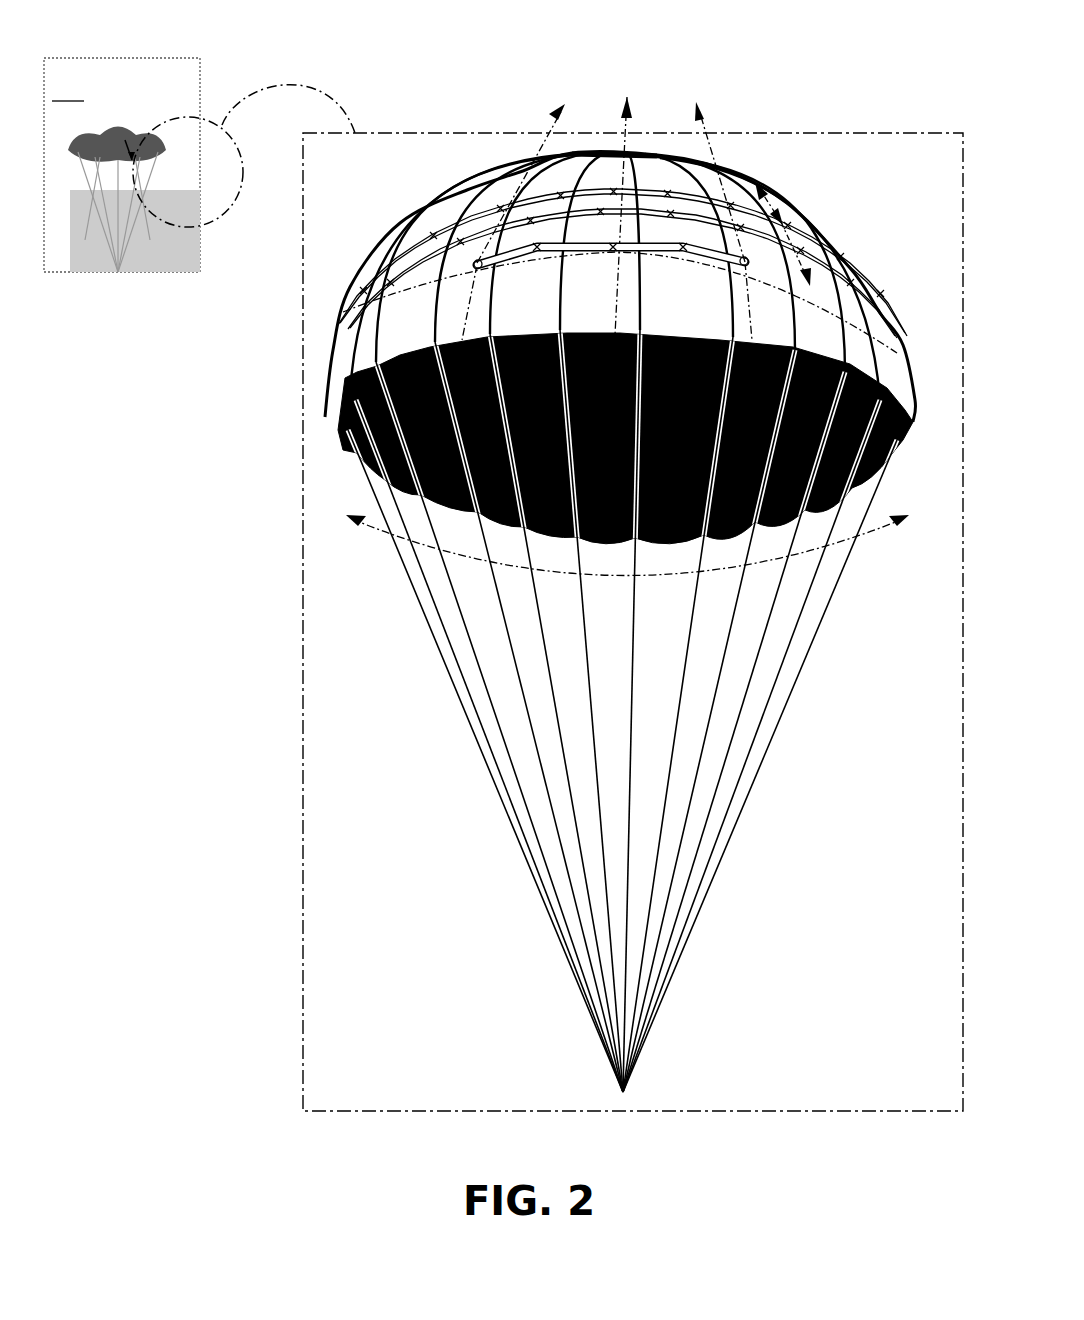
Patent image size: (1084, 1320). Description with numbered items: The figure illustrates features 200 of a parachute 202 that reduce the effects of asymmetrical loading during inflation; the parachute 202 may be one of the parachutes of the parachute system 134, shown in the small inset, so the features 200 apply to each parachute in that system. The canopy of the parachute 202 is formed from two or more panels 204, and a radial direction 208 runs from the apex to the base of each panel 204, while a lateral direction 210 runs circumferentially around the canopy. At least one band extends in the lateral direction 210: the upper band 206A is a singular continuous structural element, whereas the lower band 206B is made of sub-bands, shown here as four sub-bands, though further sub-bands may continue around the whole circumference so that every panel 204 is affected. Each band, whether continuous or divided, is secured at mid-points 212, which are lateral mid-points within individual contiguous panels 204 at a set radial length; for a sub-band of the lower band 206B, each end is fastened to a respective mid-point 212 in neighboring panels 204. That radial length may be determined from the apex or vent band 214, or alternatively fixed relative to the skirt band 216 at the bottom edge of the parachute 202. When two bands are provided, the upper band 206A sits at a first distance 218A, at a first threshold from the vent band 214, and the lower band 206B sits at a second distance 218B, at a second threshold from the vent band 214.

The parachute system 134 is at (112, 130).
The features 200 is at (783, 43).
The parachute 202 is at (223, 186).
The panels 204 is at (402, 326).
The upper band 206A is at (448, 248).
The lower band 206B is at (452, 320).
The radial direction 208 is at (693, 117).
The lateral direction 210 is at (375, 530).
The mid-points 212 is at (538, 243).
The vent band 214 is at (607, 152).
The skirt band 216 is at (808, 350).
The first distance 218A is at (793, 345).
The second distance 218B is at (841, 360).